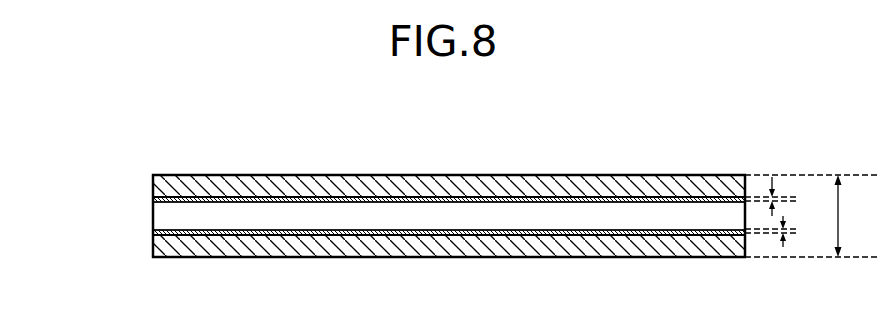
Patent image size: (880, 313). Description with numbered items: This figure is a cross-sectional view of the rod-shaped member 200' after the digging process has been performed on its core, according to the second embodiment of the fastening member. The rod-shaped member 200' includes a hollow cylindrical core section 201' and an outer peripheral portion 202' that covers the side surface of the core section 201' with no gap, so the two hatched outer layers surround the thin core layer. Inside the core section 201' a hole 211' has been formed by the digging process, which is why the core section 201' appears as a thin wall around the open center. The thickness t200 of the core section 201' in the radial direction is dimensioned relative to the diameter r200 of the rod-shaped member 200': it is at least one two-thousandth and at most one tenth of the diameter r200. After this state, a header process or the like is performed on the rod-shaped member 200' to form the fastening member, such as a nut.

The rod-shaped member 200' is at (449, 183).
The core section 201' is at (382, 216).
The outer peripheral portion 202' is at (409, 217).
The hole 211' is at (410, 216).
The thickness of the core section t200 is at (773, 199).
The diameter of the rod-shaped member r200 is at (812, 216).